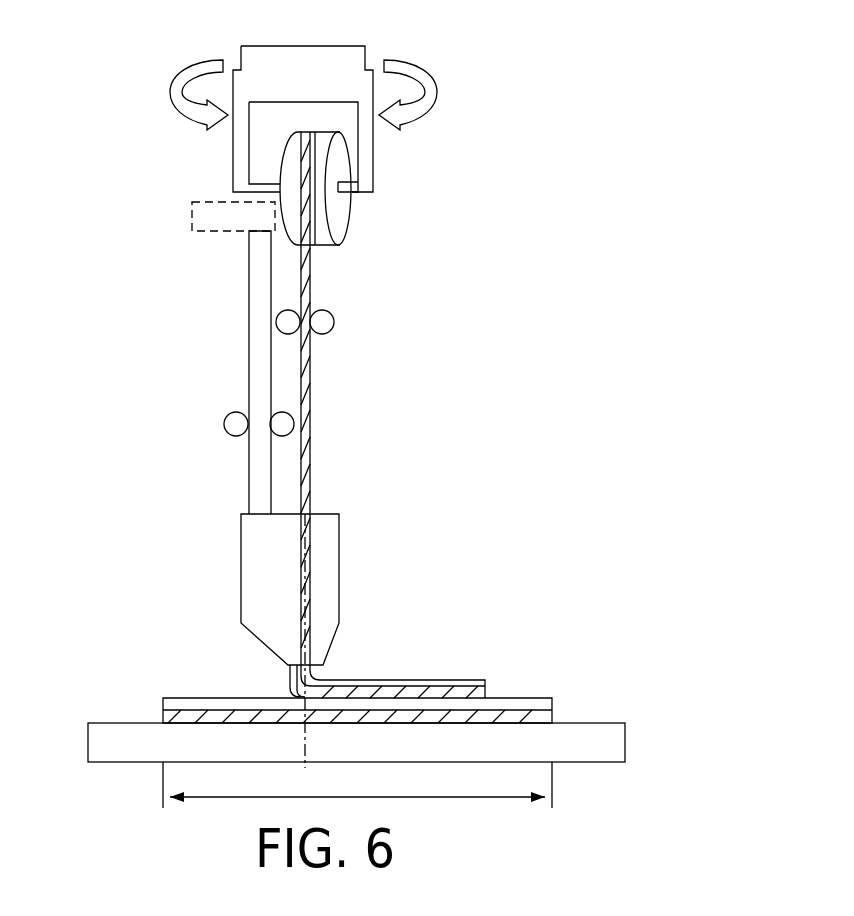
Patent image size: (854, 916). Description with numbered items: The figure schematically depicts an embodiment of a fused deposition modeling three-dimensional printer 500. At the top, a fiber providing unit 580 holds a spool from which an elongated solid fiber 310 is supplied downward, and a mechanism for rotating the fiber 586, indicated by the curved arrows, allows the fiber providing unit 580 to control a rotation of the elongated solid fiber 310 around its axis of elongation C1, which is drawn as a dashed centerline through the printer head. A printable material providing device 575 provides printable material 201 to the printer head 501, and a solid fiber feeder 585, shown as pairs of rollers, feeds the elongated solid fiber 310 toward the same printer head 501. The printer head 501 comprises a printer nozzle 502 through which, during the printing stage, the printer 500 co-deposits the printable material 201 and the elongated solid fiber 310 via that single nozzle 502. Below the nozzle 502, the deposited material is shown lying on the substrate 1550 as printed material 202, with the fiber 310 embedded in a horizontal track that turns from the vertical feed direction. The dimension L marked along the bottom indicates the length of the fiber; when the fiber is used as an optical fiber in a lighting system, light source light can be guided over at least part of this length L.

The fused deposition modeling 3D printer 500 is at (520, 57).
The mechanism for rotating the fiber 586 is at (158, 50).
The fiber providing unit 580 is at (365, 203).
The 3D printable material providing device 575 is at (188, 217).
The printable material 201 is at (258, 283).
The solid fiber feeder 585 is at (338, 305).
The elongated solid fiber 310 is at (311, 378).
The printer head 501 is at (217, 548).
The axis of elongation C1 is at (307, 558).
The printer nozzle 502 is at (262, 663).
The printed material 202 is at (505, 707).
The substrate 1550 is at (582, 682).
The length of the optical fiber L is at (357, 785).